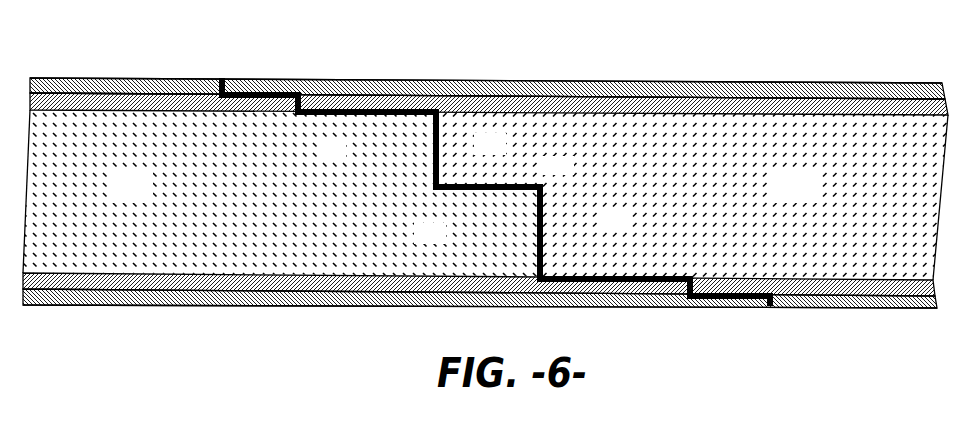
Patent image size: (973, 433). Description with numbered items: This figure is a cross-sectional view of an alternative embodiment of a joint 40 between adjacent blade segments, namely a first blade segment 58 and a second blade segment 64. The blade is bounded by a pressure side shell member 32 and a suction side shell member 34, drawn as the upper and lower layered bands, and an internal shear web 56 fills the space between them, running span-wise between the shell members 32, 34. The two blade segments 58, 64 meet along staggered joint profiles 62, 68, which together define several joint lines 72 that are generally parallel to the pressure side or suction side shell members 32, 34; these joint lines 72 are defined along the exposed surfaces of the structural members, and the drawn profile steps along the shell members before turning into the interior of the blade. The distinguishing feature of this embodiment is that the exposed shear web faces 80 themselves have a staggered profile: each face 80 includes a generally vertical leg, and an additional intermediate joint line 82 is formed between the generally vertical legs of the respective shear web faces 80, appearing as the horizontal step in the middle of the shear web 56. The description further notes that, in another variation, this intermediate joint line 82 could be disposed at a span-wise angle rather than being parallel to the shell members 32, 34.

The pressure side shell member 32 is at (307, 306).
The suction side shell member 34 is at (106, 78).
The joint 40 is at (503, 70).
The shear web 56 is at (140, 199).
The first blade segment 58 is at (162, 316).
The joint profile 62 is at (396, 156).
The second blade segment 64 is at (740, 72).
The joint profile 68 is at (567, 229).
The joint line 72 is at (258, 78).
The exposed shear web face 80 is at (441, 158).
The intermediate joint line 82 is at (510, 180).